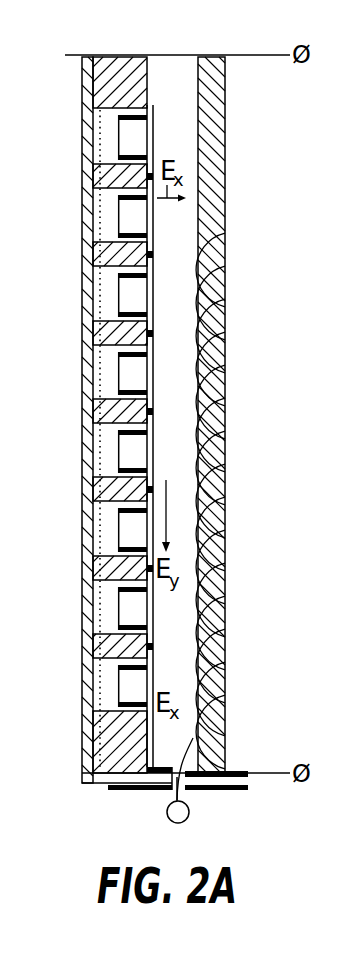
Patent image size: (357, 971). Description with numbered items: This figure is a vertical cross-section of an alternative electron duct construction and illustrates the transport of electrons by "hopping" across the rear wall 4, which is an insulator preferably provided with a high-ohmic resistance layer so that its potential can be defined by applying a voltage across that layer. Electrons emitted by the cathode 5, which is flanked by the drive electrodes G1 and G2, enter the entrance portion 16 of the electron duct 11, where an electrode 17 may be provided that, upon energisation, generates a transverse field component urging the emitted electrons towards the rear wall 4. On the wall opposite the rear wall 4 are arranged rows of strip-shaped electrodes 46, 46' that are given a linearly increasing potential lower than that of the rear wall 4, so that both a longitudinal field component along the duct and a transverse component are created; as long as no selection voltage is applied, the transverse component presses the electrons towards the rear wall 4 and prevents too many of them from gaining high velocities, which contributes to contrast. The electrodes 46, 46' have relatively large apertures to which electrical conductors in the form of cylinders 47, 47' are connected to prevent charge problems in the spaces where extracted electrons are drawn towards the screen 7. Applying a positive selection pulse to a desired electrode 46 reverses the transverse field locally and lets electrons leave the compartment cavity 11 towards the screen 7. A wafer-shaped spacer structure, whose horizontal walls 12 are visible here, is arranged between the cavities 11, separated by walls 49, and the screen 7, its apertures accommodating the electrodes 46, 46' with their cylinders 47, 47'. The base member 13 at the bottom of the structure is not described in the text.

The rear wall 4 is at (226, 200).
The cathode 5 is at (167, 814).
The screen 7 is at (97, 124).
The electron duct 11 is at (165, 428).
The horizontal walls 12 is at (97, 326).
The base plate 13 is at (107, 782).
The entrance portion 16 is at (158, 725).
The electrode 17 is at (123, 740).
The electrode 46 is at (197, 368).
The electrode 46' is at (201, 291).
The cylinder 47 is at (73, 373).
The cylinder 47' is at (73, 293).
The walls 49 is at (172, 76).
The drive electrode G1 is at (233, 790).
The drive electrode G2 is at (233, 771).